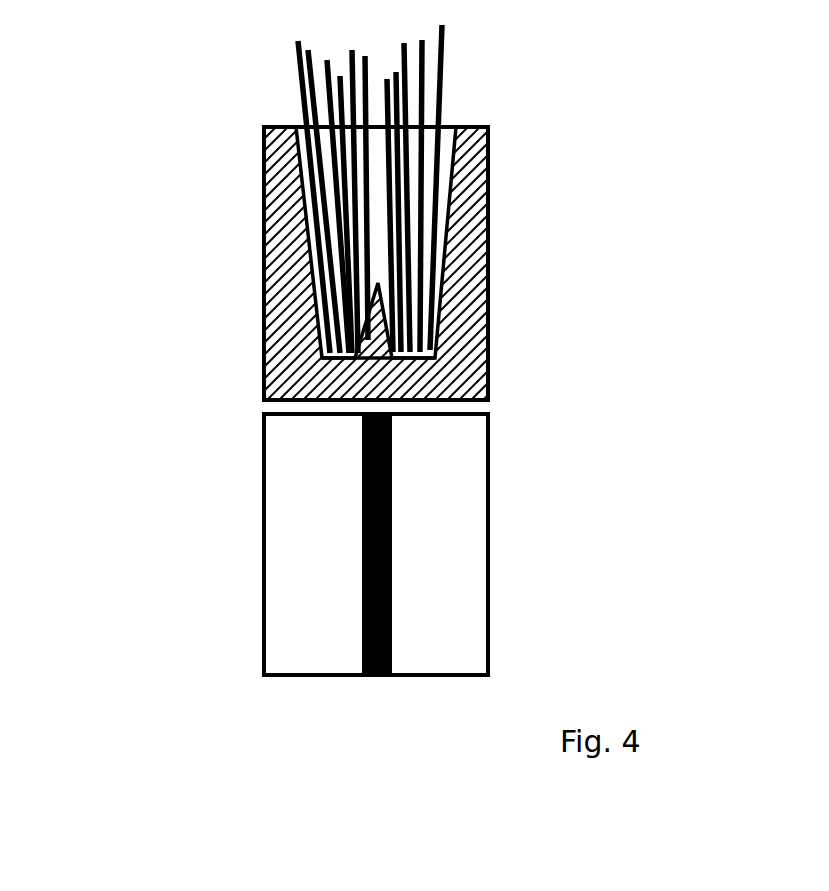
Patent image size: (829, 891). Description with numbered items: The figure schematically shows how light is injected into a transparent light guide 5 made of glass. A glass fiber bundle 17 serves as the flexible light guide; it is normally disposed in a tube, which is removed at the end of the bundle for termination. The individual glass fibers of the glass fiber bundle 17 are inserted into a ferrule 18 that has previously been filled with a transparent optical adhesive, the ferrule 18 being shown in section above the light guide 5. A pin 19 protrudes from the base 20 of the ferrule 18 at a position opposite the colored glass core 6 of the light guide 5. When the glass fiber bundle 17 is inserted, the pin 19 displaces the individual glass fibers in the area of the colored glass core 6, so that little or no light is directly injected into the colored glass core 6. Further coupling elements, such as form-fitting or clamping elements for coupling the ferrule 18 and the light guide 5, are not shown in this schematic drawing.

The light guide 5 is at (440, 578).
The colored glass core 6 is at (362, 560).
The glass fiber bundle 17 is at (415, 205).
The ferrule 18 is at (467, 315).
The pin 19 is at (388, 347).
The base 20 is at (343, 383).